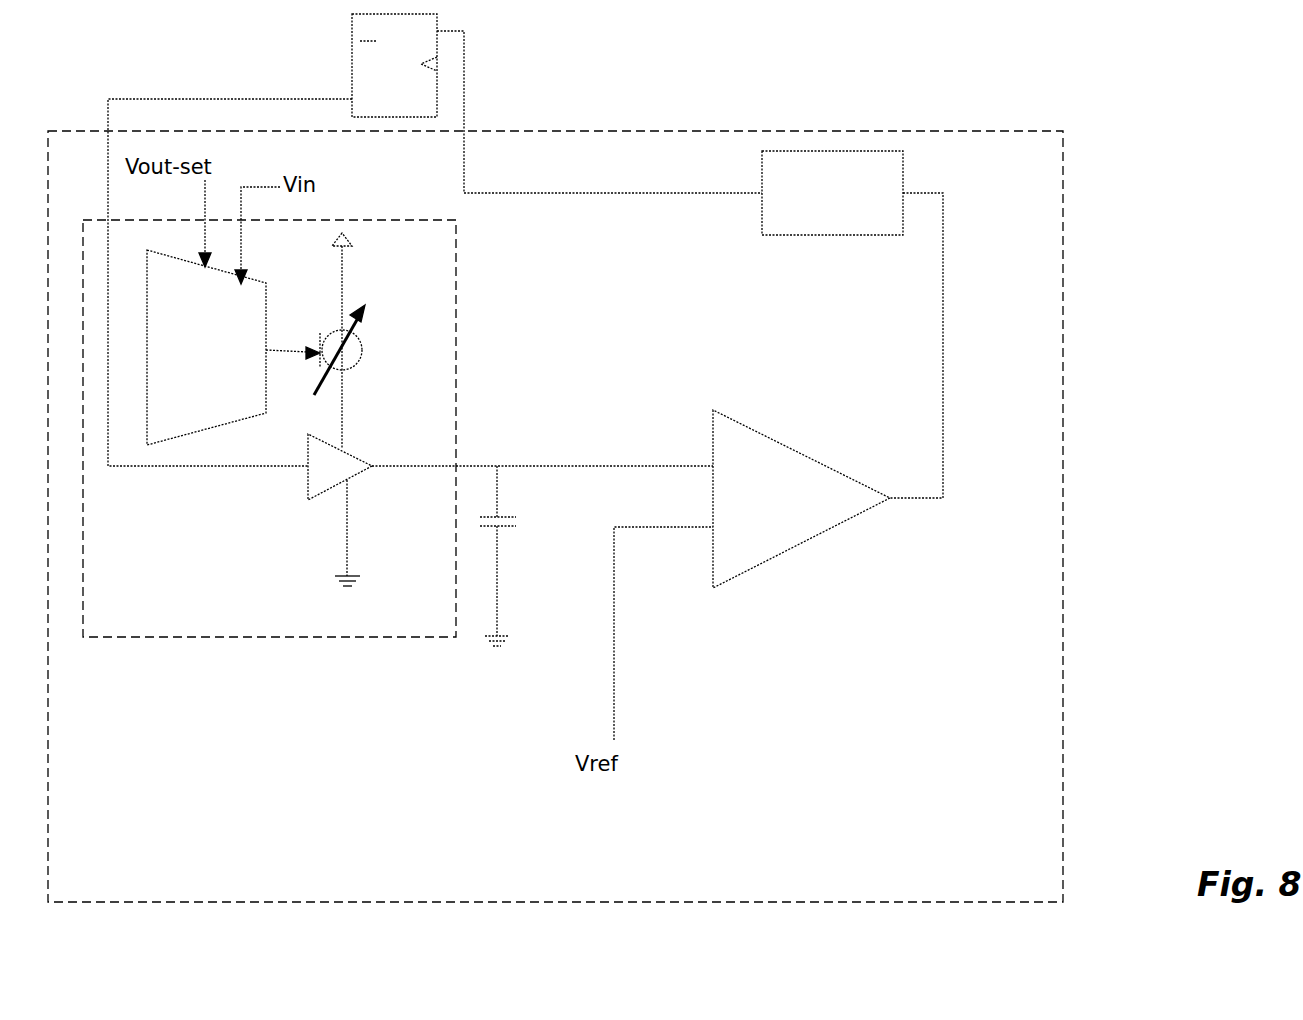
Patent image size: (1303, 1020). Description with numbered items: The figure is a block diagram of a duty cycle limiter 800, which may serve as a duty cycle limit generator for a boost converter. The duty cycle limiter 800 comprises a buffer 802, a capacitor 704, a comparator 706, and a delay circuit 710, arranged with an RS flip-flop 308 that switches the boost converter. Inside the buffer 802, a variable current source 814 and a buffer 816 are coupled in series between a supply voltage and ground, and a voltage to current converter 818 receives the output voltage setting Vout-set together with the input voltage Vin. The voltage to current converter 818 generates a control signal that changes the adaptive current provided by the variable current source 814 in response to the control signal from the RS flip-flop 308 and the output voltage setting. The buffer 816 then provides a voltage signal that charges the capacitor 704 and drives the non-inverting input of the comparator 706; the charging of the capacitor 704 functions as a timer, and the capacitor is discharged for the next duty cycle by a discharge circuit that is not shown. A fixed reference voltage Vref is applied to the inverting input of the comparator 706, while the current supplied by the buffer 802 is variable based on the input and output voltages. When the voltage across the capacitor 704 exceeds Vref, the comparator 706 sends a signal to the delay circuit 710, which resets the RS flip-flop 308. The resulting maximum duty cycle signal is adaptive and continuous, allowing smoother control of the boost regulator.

The RS flip-flop 308 is at (350, 18).
The voltage to current converter 818 is at (249, 286).
The variable current source 814 is at (355, 366).
The buffer 816 is at (306, 492).
The capacitor 704 is at (500, 527).
The comparator 706 is at (712, 565).
The delay circuit 710 is at (761, 231).
The duty cycle limiter 800 is at (1067, 540).
The buffer 802 is at (172, 638).